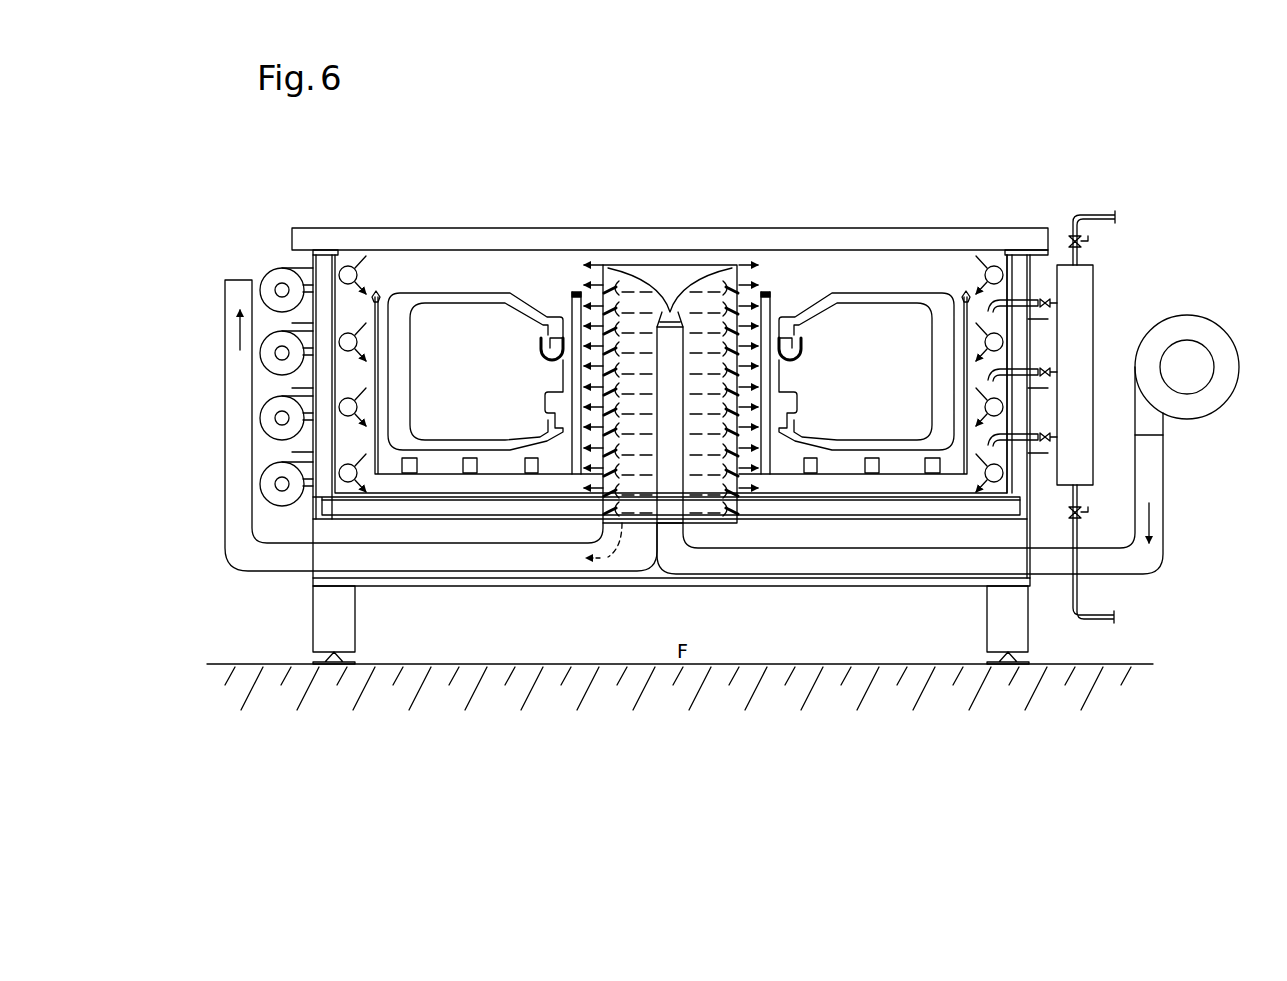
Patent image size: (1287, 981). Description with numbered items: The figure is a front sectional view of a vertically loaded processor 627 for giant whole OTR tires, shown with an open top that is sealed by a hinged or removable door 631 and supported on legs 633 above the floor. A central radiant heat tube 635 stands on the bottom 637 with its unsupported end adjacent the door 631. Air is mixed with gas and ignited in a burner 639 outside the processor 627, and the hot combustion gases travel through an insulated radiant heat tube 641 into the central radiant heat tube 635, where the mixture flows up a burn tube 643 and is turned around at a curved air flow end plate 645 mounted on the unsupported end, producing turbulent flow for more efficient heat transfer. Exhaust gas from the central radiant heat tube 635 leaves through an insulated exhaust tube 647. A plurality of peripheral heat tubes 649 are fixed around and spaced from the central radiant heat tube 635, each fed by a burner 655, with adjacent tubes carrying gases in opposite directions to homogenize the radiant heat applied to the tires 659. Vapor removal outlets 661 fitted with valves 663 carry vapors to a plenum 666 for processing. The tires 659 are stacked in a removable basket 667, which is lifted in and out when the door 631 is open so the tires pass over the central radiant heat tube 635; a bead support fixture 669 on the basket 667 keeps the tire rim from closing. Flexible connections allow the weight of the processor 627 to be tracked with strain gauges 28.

The vertically loaded processor 627 is at (988, 124).
The door 631 is at (875, 240).
The legs 633 is at (332, 623).
The strain gauges 28 is at (347, 658).
The central radiant heat tube 635 is at (759, 282).
The bottom 637 is at (820, 508).
The burner 639 is at (1213, 395).
The insulated radiant heat tube 641 is at (875, 563).
The burn tube 643 is at (680, 343).
The air flow end plate 645 is at (644, 280).
The insulated exhaust tube 647 is at (235, 472).
The peripheral heat tubes 649 is at (351, 333).
The burner 655 is at (270, 478).
The tires 659 is at (478, 297).
The vapor removal outlets 661 is at (1050, 437).
The valves 663 is at (1018, 437).
The plenum 666 is at (1077, 338).
The basket 667 is at (377, 292).
The bead support fixture 669 is at (552, 362).